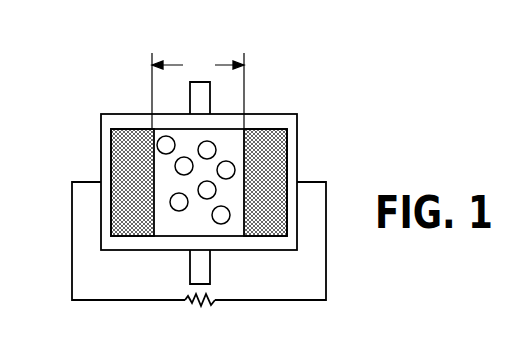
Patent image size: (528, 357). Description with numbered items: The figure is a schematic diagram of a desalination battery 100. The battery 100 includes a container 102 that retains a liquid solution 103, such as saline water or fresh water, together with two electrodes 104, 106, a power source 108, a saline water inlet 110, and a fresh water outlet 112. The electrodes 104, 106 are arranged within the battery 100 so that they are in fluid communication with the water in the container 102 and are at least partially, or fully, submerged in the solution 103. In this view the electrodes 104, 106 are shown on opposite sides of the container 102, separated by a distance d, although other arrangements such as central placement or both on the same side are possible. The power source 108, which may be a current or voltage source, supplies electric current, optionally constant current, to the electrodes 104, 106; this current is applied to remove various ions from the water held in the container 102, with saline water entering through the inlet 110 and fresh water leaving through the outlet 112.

The desalination battery 100 is at (234, 181).
The container 102 is at (122, 113).
The liquid solution 103 is at (177, 228).
The electrode 104 is at (125, 163).
The electrode 106 is at (271, 163).
The power source 108 is at (203, 305).
The saline water inlet 110 is at (210, 103).
The fresh water outlet 112 is at (213, 257).